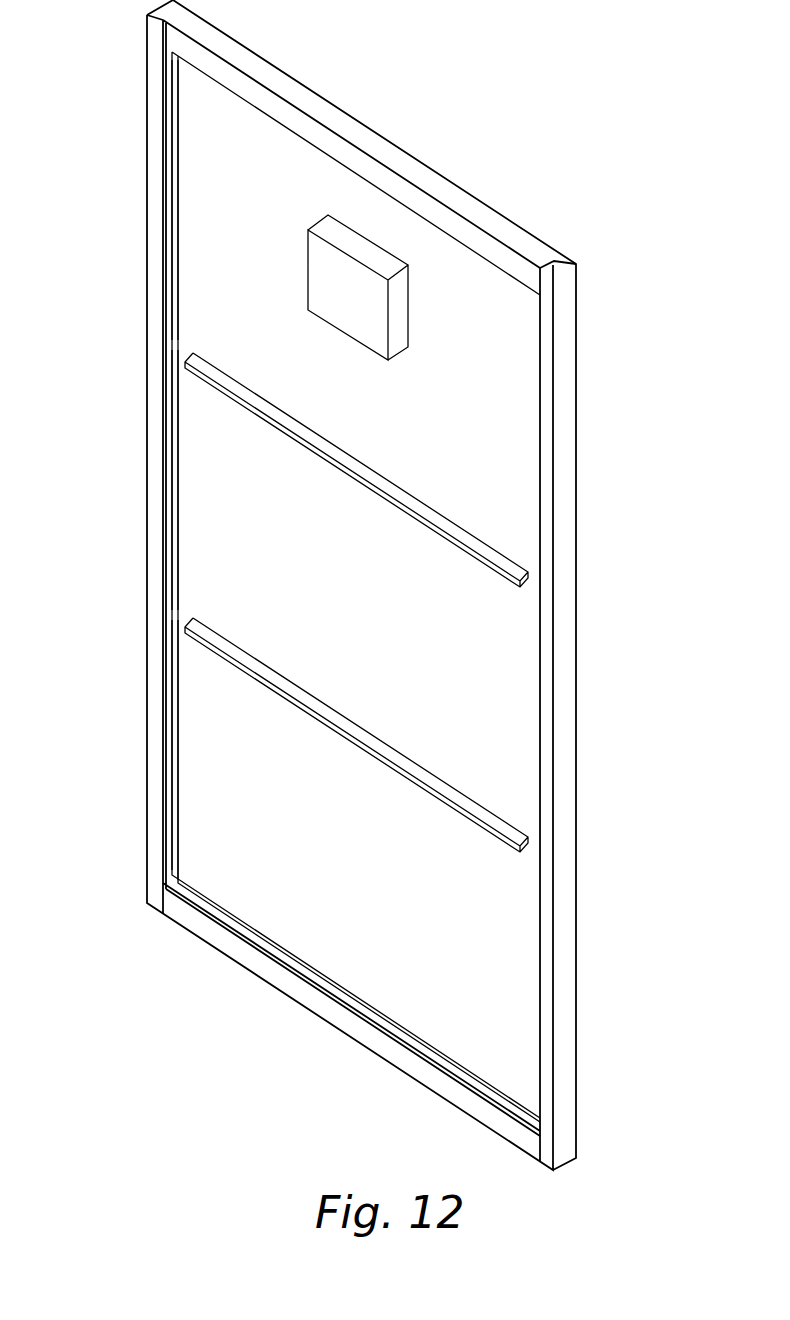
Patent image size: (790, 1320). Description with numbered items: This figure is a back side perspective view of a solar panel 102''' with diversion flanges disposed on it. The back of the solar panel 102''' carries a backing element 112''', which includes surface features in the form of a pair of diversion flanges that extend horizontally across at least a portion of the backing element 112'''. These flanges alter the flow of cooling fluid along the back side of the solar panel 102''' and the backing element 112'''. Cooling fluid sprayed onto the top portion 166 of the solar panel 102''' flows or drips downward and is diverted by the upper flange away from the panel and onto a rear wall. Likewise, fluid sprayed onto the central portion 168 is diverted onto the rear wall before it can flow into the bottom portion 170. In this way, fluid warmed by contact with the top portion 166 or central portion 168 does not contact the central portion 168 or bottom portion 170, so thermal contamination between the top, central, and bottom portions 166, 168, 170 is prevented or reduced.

The solar panel 102''' is at (361, 585).
The backing element 112''' is at (432, 587).
The top portion 166 is at (197, 267).
The central portion 168 is at (199, 503).
The bottom portion 170 is at (206, 742).